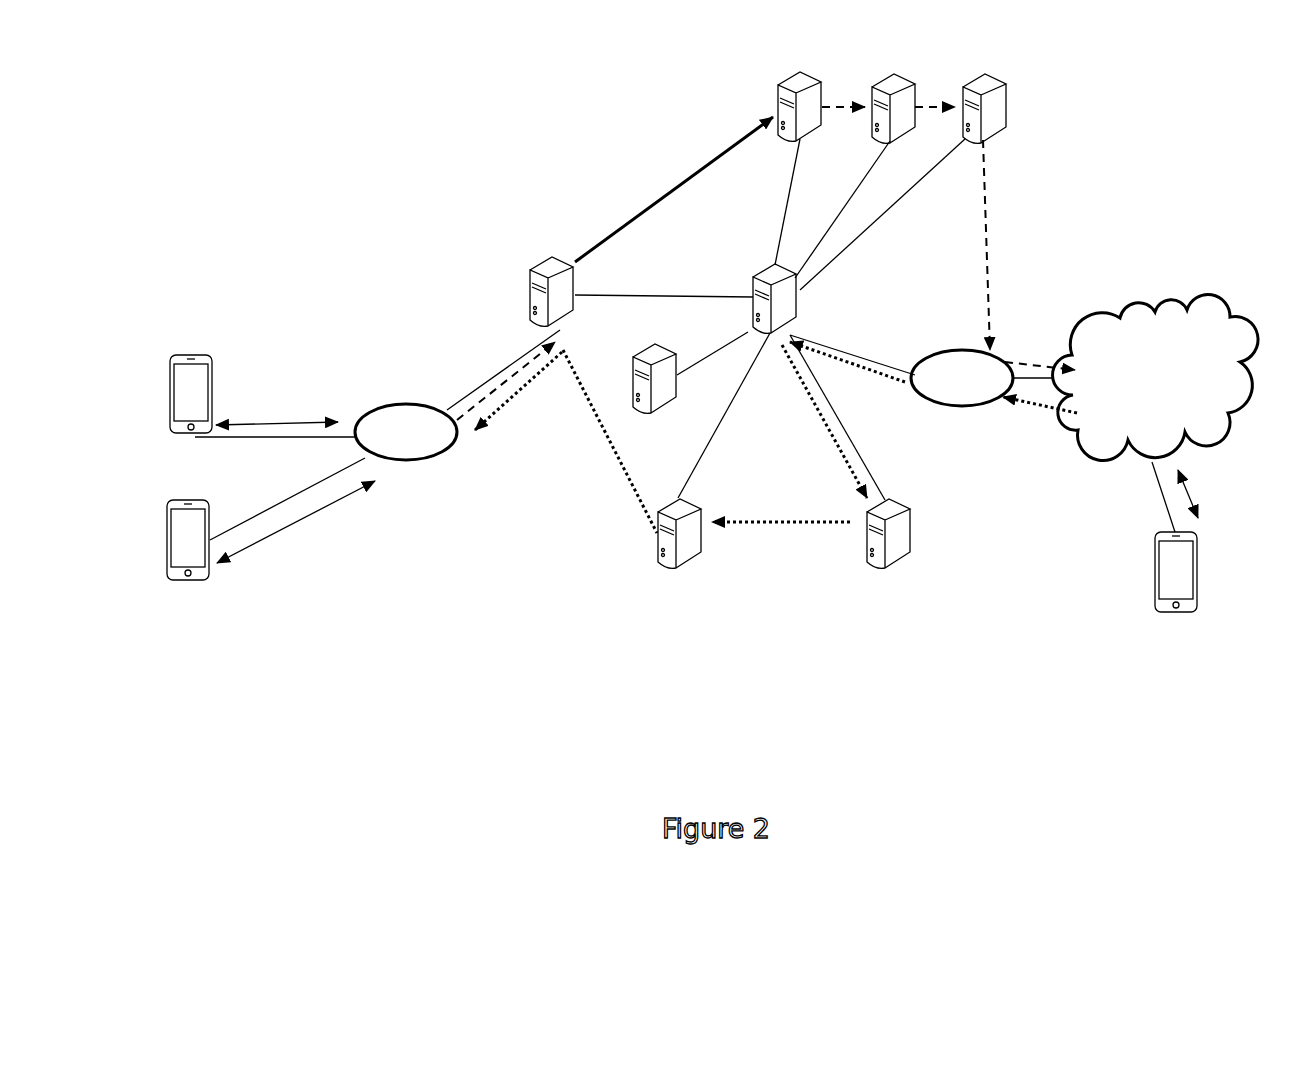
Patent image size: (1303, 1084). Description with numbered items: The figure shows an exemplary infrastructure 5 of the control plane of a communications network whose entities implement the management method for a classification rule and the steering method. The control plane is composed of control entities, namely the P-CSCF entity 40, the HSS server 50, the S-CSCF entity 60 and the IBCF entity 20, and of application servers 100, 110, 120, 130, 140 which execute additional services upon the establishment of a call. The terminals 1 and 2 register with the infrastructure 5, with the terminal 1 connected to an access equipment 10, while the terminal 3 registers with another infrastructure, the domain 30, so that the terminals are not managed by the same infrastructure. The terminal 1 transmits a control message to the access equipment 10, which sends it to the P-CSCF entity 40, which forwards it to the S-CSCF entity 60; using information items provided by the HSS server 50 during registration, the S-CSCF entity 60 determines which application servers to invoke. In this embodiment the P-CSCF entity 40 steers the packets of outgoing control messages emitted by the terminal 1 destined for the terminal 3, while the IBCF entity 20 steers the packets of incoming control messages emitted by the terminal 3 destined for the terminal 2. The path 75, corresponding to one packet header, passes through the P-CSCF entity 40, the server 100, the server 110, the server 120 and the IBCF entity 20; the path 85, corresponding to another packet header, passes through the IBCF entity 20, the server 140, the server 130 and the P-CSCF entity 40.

The terminal 1 is at (187, 580).
The terminal 2 is at (192, 355).
The terminal 3 is at (1185, 612).
The infrastructure 5 is at (593, 627).
The access equipment 10 is at (403, 407).
The IBCF entity 20 is at (962, 352).
The domain 30 is at (1157, 305).
The P-CSCF entity 40 is at (551, 258).
The HSS server 50 is at (655, 413).
The S-CSCF entity 60 is at (752, 333).
The path 75 is at (988, 193).
The path 85 is at (783, 525).
The server 100 is at (800, 73).
The server 110 is at (892, 73).
The server 120 is at (983, 73).
The server 130 is at (678, 566).
The server 140 is at (887, 565).